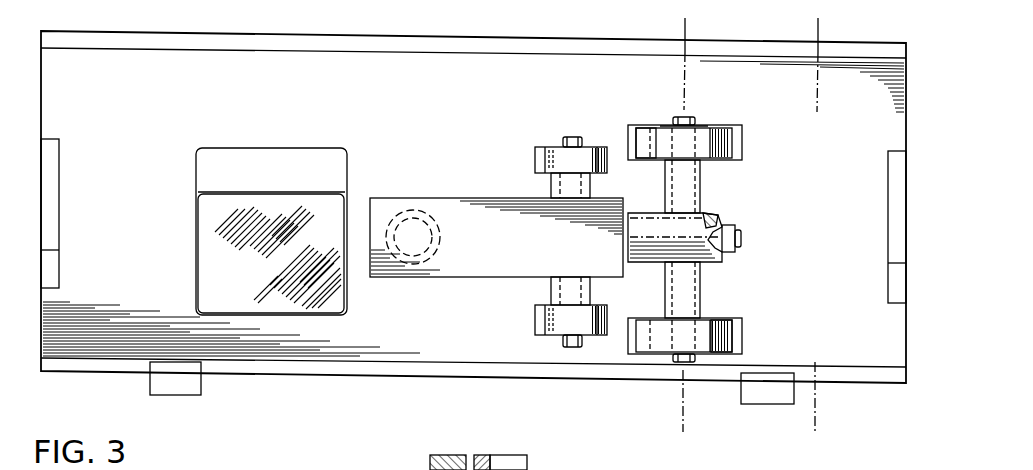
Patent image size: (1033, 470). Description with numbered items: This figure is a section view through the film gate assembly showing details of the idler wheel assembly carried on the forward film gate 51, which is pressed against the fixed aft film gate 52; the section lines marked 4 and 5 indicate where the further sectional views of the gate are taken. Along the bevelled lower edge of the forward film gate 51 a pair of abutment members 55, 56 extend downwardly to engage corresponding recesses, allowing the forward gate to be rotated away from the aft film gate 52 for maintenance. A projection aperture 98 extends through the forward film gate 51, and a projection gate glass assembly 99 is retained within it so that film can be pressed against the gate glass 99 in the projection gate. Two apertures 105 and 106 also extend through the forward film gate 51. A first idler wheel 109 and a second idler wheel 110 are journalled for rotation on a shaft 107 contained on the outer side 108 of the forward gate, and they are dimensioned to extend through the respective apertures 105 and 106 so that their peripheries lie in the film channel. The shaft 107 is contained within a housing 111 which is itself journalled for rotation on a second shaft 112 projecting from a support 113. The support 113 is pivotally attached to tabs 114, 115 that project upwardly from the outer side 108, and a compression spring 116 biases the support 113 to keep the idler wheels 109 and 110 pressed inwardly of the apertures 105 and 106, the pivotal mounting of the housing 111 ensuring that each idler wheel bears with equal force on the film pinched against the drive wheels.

The section line 4- 4 is at (689, 32).
The section line 5- 5 is at (822, 33).
The forward film gate 51 is at (440, 455).
The aft film gate 52 is at (493, 455).
The abutment member 55 is at (785, 405).
The abutment member 56 is at (203, 385).
The projection aperture 98 is at (279, 152).
The projection gate glass assembly 99 is at (262, 272).
The aperture 105 is at (742, 145).
The aperture 106 is at (742, 337).
The shaft 107 is at (693, 118).
The outer side 108 is at (430, 109).
The first idler wheel 109 is at (640, 127).
The second idler wheel 110 is at (724, 320).
The housing 111 is at (701, 190).
The second shaft 112 is at (741, 240).
The support 113 is at (484, 198).
The tab 114 is at (537, 146).
The tab 115 is at (535, 327).
The compression spring 116 is at (408, 210).